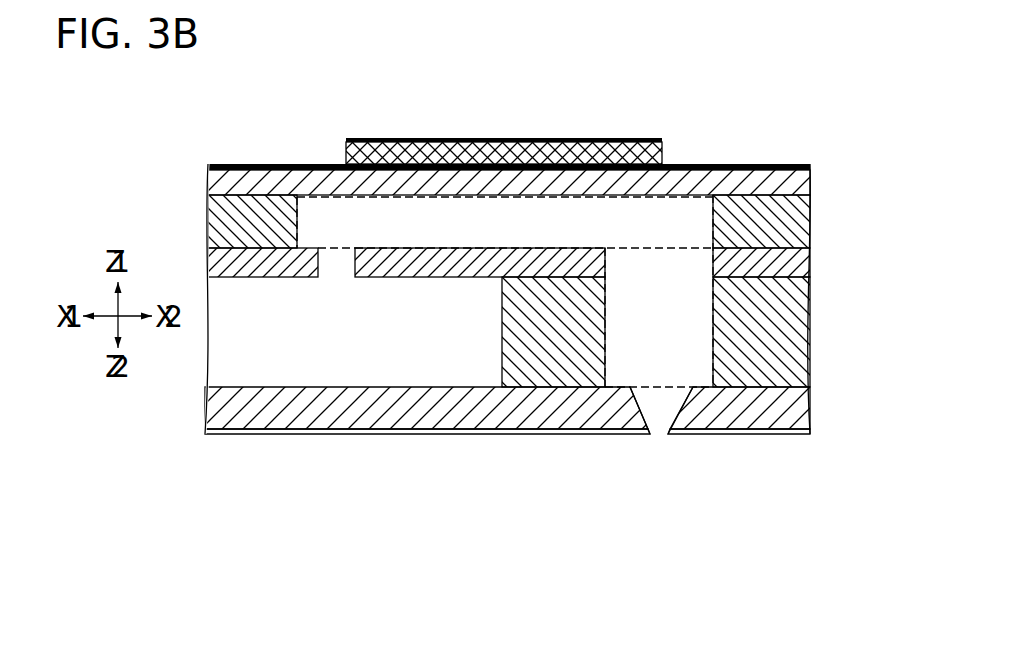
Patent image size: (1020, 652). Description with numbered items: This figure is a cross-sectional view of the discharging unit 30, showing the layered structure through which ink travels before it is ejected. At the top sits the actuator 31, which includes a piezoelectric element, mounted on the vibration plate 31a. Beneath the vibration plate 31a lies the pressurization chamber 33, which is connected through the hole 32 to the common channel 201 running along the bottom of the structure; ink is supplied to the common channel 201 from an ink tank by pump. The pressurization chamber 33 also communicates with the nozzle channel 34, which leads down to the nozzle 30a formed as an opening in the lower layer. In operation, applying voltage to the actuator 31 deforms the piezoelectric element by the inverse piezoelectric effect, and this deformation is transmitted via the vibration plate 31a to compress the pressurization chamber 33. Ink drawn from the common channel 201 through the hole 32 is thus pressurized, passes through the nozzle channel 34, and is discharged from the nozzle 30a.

The discharging unit 30 is at (544, 287).
The nozzle 30a is at (658, 441).
The actuator 31 is at (662, 151).
The vibration plate 31a is at (799, 181).
The hole 32 is at (338, 281).
The pressurization chamber 33 is at (688, 225).
The nozzle channel 34 is at (688, 320).
The common channel 201 is at (427, 378).